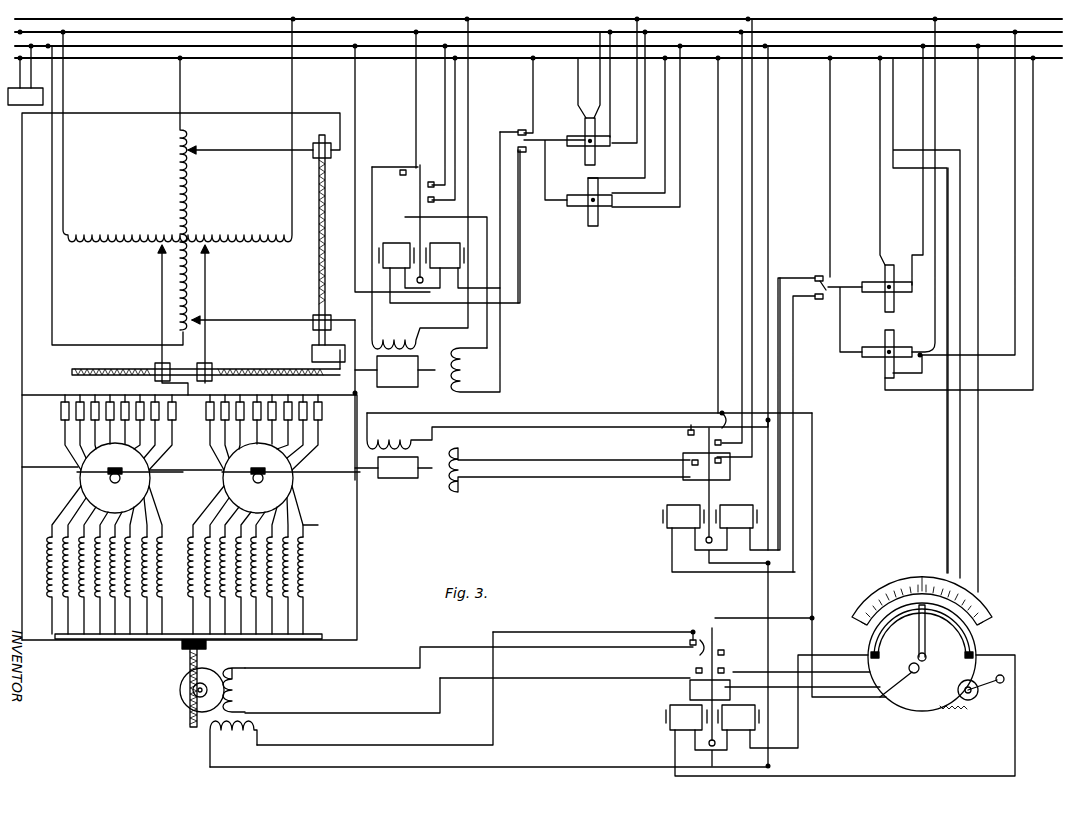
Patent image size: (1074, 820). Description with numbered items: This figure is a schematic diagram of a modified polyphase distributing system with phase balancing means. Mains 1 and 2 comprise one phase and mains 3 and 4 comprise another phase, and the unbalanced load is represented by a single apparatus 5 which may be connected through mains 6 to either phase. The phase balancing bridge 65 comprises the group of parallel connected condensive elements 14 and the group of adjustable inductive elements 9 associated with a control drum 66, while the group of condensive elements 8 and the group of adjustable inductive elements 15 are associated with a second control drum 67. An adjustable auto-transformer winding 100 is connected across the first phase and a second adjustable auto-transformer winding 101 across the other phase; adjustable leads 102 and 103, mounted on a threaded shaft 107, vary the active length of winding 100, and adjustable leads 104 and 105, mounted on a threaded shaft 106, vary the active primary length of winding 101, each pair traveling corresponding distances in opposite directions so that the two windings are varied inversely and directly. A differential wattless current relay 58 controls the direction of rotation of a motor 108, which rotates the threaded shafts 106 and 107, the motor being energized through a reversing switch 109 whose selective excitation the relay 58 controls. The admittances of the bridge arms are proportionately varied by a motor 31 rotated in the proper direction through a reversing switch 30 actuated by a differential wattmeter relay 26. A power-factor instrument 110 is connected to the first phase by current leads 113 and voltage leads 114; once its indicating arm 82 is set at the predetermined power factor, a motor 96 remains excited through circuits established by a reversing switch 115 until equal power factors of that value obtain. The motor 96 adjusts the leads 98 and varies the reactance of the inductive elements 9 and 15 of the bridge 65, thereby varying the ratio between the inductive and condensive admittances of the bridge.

The main 1 is at (1061, 22).
The main 2 is at (1062, 35).
The main 3 is at (1062, 49).
The main 4 is at (1062, 61).
The unbalanced load apparatus 5 is at (43, 97).
The mains 6 is at (22, 72).
The group of condensive elements 8 is at (322, 410).
The group of adjustable inductive elements 9 is at (52, 540).
The group of condensive elements 14 is at (63, 410).
The group of adjustable inductive elements 15 is at (306, 545).
The differential wattmeter relay 26 is at (905, 298).
The reversing switch 30 is at (774, 392).
The motor 31 is at (432, 474).
The differential wattless current relay 58 is at (590, 161).
The bridge 65 is at (318, 525).
The control drum 66 is at (130, 478).
The second control drum 67 is at (291, 478).
The indicating arm 82 is at (920, 622).
The motor 96 is at (186, 700).
The leads 98 is at (160, 634).
The adjustable auto-transformer winding 100 is at (183, 178).
The adjustable auto-transformer winding 101 is at (250, 230).
The adjustable lead 102 is at (252, 146).
The adjustable lead 103 is at (268, 320).
The adjustable lead 104 is at (158, 262).
The adjustable lead 105 is at (205, 276).
The threaded shaft 106 is at (260, 372).
The threaded shaft 107 is at (326, 246).
The motor 108 is at (427, 214).
The reversing switch 109 is at (446, 190).
The power-factor instrument 110 is at (964, 689).
The current leads 113 is at (955, 560).
The voltage leads 114 is at (982, 580).
The reversing switch 115 is at (680, 705).